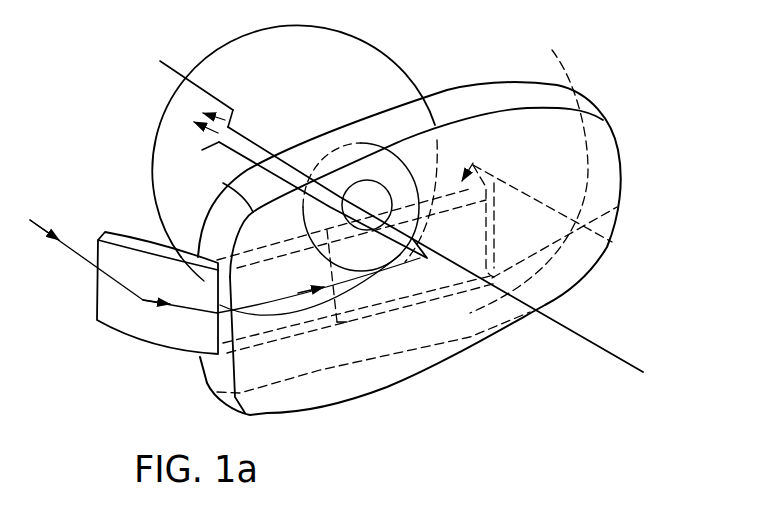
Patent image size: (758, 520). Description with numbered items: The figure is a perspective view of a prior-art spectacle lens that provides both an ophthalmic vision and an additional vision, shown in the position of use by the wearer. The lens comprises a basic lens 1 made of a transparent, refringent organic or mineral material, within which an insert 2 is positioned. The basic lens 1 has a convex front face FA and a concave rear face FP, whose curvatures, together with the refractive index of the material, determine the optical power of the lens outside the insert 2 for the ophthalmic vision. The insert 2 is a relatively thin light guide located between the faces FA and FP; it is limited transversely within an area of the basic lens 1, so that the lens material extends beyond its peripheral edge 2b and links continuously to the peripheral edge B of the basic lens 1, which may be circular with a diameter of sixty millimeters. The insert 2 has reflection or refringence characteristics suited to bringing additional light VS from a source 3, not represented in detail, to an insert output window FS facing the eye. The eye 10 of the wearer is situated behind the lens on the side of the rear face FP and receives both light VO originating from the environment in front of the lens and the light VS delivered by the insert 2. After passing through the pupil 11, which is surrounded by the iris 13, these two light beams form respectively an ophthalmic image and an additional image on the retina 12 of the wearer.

The basic lens 1 is at (522, 107).
The insert 2 is at (450, 178).
The peripheral edge 2b is at (470, 289).
The source 3 is at (135, 340).
The eye 10 is at (232, 65).
The pupil 11 is at (377, 193).
The retina 12 is at (169, 104).
The iris 13 is at (357, 147).
The peripheral edge B is at (620, 142).
The front face FA is at (545, 181).
The rear face FP is at (560, 153).
The insert output window FS is at (441, 273).
The light VO is at (612, 322).
The light VS is at (202, 150).